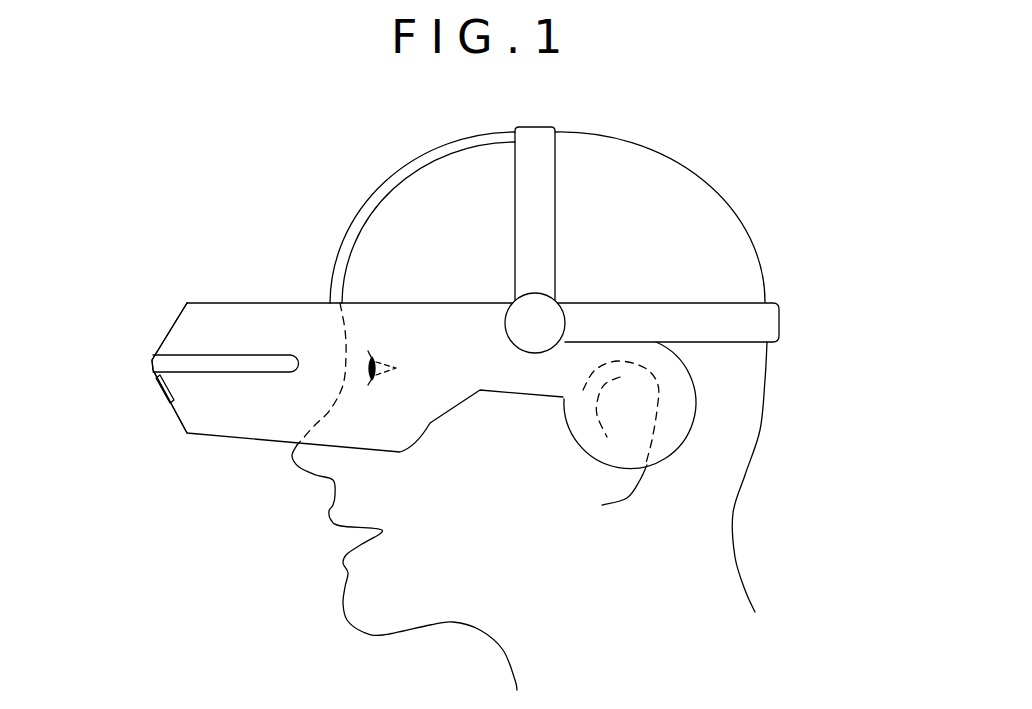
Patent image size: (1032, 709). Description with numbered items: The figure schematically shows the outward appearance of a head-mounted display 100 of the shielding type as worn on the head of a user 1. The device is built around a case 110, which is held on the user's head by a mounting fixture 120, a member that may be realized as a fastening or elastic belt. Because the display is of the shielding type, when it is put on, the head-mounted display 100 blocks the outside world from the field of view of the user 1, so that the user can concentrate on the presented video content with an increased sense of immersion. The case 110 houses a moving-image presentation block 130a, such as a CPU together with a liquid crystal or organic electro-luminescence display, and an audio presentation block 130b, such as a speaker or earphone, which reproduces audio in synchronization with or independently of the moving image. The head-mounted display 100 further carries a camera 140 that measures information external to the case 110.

The user 1 is at (638, 140).
The head-mounted display 100 is at (469, 269).
The case 110 is at (268, 302).
The mounting fixture 120 is at (535, 131).
The moving-image presentation block 130a is at (167, 335).
The audio presentation block 130b is at (678, 400).
The camera 140 is at (160, 394).